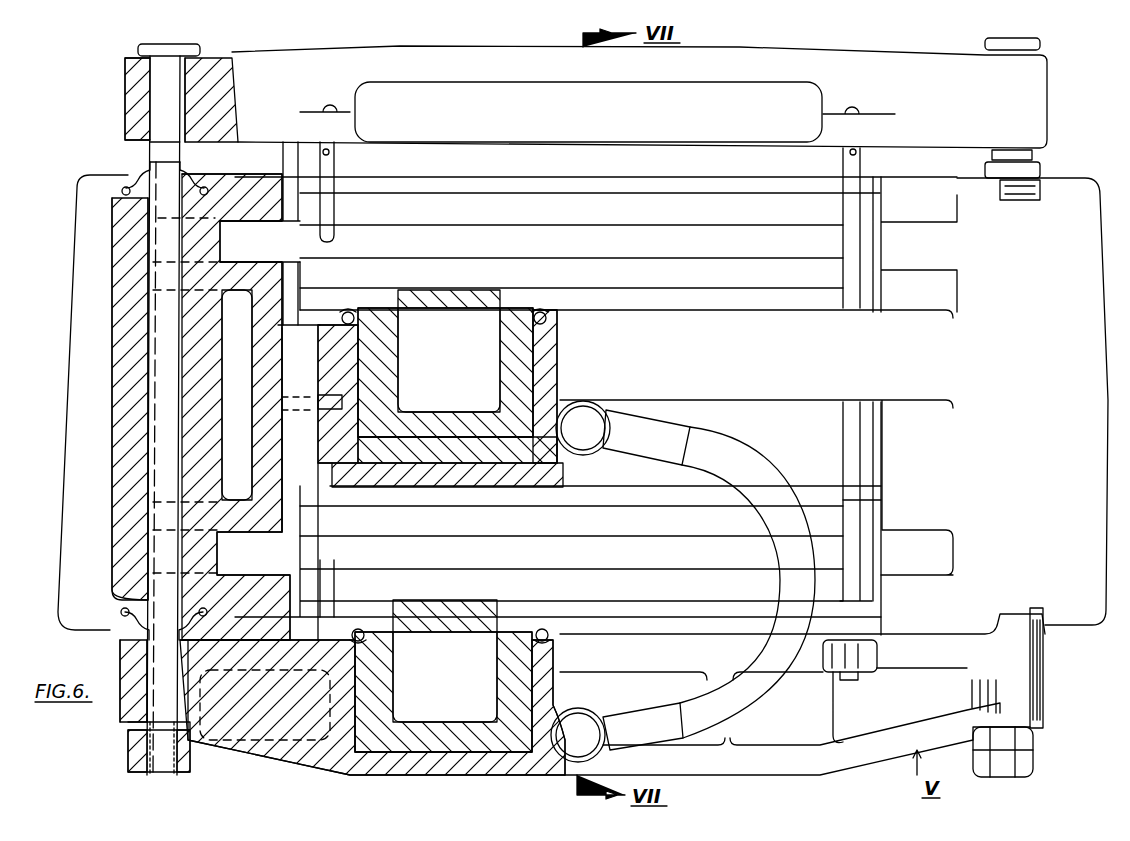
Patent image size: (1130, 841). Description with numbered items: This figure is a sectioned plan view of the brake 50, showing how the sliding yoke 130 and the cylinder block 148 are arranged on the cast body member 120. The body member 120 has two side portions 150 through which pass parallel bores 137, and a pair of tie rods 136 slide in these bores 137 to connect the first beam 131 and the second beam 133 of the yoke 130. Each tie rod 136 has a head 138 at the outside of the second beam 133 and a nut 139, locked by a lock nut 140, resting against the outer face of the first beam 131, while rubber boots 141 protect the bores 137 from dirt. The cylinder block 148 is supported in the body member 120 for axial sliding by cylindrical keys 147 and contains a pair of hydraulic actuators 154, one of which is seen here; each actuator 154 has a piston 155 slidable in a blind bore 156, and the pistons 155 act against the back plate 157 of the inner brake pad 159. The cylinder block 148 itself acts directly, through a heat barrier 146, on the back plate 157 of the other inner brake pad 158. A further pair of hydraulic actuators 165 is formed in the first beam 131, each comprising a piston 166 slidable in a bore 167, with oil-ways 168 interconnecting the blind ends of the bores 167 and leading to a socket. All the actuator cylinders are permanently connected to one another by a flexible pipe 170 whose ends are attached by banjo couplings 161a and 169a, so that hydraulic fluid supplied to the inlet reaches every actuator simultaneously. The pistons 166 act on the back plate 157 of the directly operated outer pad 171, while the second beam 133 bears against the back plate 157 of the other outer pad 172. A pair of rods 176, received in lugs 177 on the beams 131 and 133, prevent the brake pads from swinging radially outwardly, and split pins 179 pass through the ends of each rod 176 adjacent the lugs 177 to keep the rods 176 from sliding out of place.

The press unit 50 is at (1104, 372).
The body member 120 is at (1100, 480).
The yoke 130 is at (276, 769).
The first beam 131 is at (432, 778).
The second beam 133 is at (395, 52).
The tie rod 136 is at (150, 404).
The bore 137 is at (152, 485).
The head 138 is at (174, 52).
The nut 139 is at (128, 748).
The lock nut 140 is at (183, 762).
The rubber boot 141 is at (133, 178).
The heat barrier 146 is at (428, 480).
The cylindrical key 147 is at (300, 330).
The cylinder block 148 is at (352, 475).
The side portion 150 is at (112, 370).
The hydraulic actuator 154 is at (477, 384).
The piston 155 is at (392, 350).
The blind bore 156 is at (402, 410).
The back plate 157 is at (513, 198).
The inner brake pad 158 is at (572, 534).
The inner brake pad 159 is at (492, 284).
The banjo coupling 161a is at (610, 402).
The hydraulic actuator 165 is at (472, 664).
The piston 166 is at (402, 712).
The bore 167 is at (390, 690).
The oil-way 168 is at (585, 722).
The banjo coupling 169a is at (625, 750).
The flexible pipe 170 is at (757, 460).
The outer pad 171 is at (540, 599).
The outer pad 172 is at (492, 219).
The rod 176 is at (340, 240).
The lug 177 is at (300, 112).
The split pin 179 is at (334, 158).